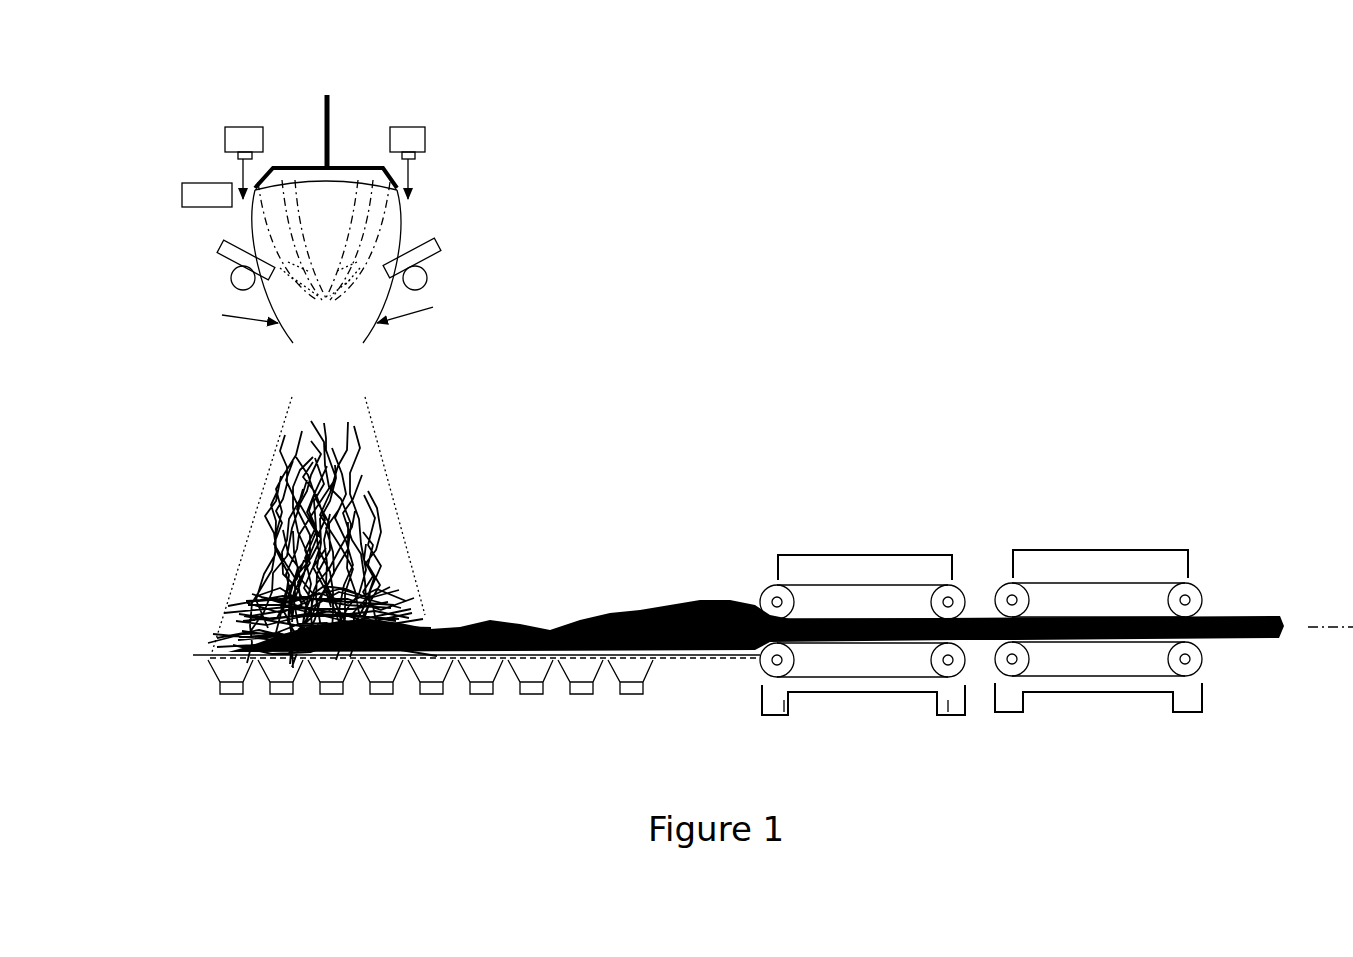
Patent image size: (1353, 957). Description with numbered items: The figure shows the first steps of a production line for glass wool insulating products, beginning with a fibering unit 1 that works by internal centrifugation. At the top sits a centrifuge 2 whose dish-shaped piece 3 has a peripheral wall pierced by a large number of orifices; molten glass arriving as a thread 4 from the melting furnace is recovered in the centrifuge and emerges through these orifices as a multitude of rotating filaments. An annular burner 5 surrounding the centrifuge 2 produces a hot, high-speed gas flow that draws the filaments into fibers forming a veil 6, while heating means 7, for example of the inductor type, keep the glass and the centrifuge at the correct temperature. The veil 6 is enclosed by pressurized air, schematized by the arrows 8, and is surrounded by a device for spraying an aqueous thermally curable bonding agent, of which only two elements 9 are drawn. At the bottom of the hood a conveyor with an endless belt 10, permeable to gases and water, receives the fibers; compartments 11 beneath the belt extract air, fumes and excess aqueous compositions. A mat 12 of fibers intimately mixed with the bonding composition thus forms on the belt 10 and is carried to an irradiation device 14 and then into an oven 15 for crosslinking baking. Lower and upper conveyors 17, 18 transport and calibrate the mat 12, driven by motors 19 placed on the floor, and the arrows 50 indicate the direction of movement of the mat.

The fibering unit 1 is at (470, 202).
The centrifuge 2 is at (316, 153).
The dish-shaped piece 3 is at (290, 177).
The thread 4 is at (329, 142).
The annular burner 5 is at (405, 135).
The veil 6 is at (328, 228).
The heating means 7 is at (220, 200).
The arrows 8 is at (258, 325).
The elements of bonding agent spraying device 9 is at (227, 256).
The endless belt 10 is at (210, 657).
The compartments 11 is at (380, 673).
The mat 12 is at (503, 618).
The irradiation device 14 is at (934, 546).
The oven 15 is at (1114, 537).
The lower conveyor 17 is at (807, 680).
The upper conveyor 18 is at (800, 582).
The motors 19 is at (784, 705).
The arrows 50 is at (1343, 622).